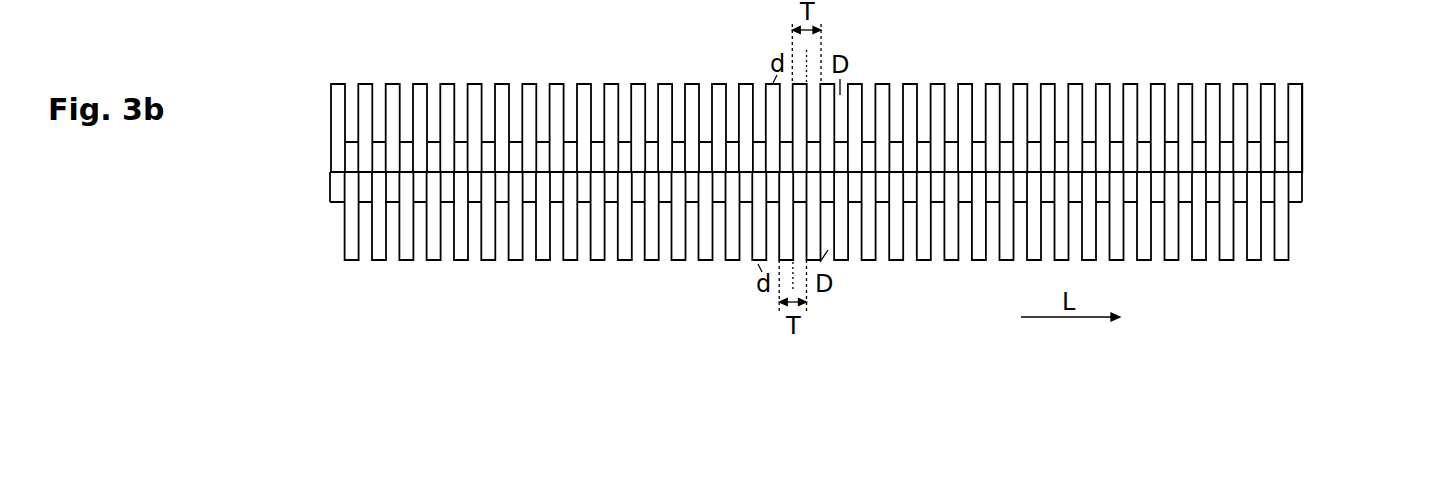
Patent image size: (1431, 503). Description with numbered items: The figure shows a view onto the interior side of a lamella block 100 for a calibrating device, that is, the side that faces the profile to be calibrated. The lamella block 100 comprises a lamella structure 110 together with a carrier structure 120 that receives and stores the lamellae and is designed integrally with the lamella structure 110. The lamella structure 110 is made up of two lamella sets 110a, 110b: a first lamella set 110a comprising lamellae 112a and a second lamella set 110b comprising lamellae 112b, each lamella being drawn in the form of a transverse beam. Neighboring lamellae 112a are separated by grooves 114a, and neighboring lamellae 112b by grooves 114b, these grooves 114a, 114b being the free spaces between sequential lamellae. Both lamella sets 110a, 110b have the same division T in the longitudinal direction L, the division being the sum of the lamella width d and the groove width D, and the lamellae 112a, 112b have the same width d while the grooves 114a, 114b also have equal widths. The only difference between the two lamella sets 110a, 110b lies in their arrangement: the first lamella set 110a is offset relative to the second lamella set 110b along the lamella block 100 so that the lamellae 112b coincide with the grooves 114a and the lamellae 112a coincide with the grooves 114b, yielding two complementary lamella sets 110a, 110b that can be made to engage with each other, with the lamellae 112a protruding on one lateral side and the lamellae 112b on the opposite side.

The lamella block 100 is at (903, 339).
The lamella structure 110 is at (1313, 135).
The first lamella set 110a is at (335, 240).
The second lamella set 110b is at (321, 130).
The lamellae of the first lamella set 112a is at (401, 248).
The lamellae of the second lamella set 112b is at (1181, 105).
The grooves of the first lamella set 114a is at (472, 253).
The grooves of the second lamella set 114b is at (1197, 93).
The carrier structure 120 is at (1005, 142).